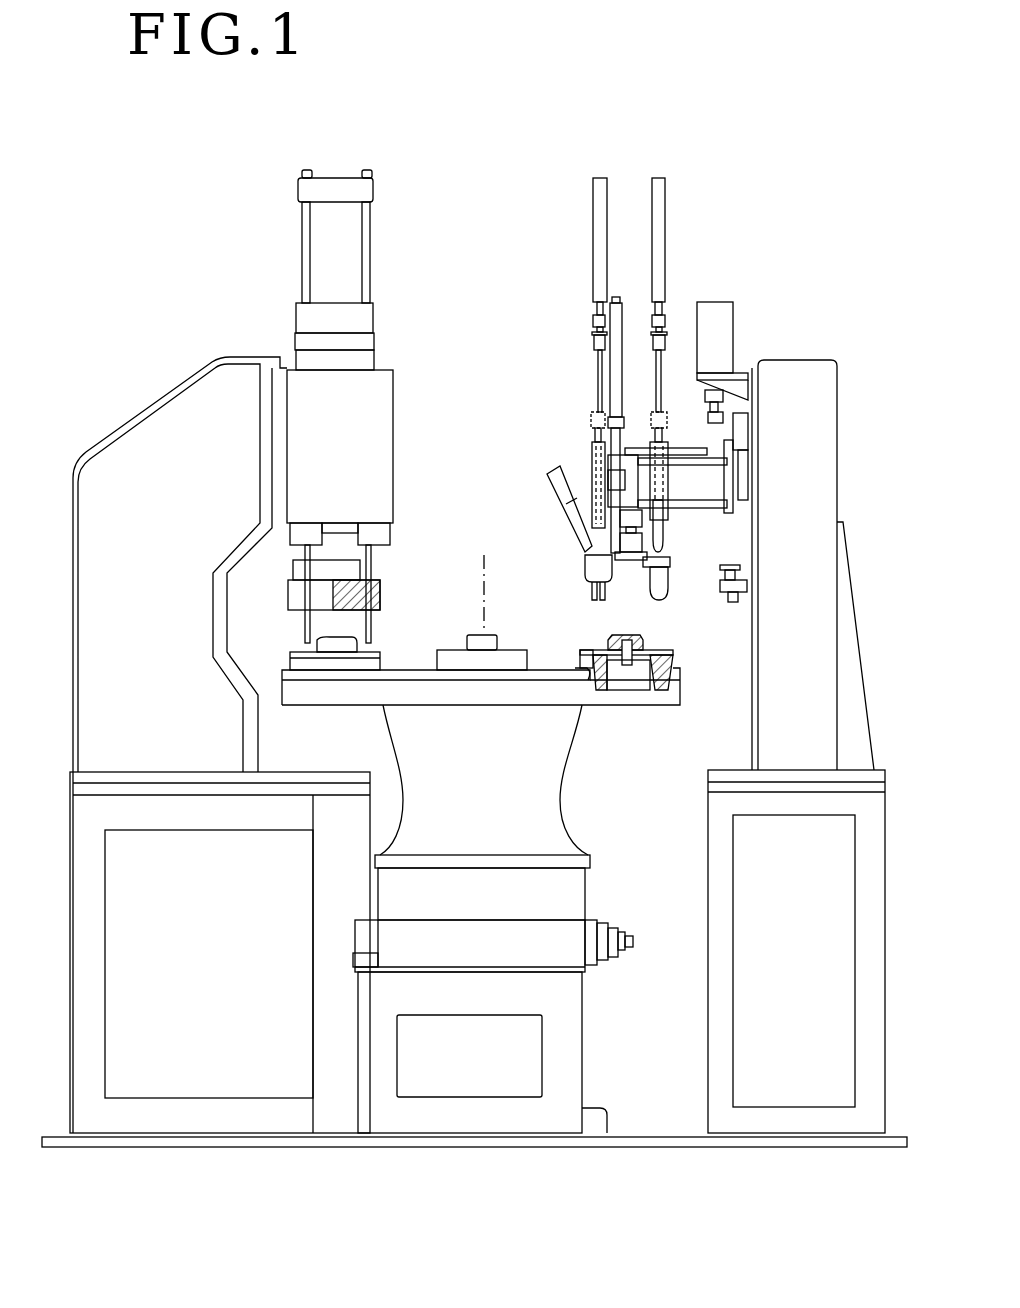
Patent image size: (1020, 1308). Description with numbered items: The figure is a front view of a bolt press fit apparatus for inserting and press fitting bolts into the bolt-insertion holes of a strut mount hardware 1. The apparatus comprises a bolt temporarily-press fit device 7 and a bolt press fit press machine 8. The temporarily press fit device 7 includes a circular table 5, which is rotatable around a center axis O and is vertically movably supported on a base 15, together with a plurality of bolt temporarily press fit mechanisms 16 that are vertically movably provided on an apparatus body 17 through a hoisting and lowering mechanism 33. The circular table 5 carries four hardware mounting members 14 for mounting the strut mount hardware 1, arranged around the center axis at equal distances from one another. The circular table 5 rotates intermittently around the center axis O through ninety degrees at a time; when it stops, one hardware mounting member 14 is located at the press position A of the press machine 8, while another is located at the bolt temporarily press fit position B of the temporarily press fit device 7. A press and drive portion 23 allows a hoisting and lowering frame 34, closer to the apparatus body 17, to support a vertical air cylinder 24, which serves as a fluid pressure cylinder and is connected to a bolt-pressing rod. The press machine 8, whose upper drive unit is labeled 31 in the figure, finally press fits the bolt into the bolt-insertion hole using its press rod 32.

The strut mount hardware 1 is at (661, 650).
The circular table 5 is at (422, 668).
The bolt temporarily-press fit device 7 is at (630, 362).
The bolt press fit press machine 8 is at (405, 396).
The hardware mounting member 14 is at (573, 643).
The base 15 is at (565, 1031).
The bolt temporarily press fit mechanism 16 is at (581, 461).
The apparatus body 17 is at (755, 720).
The press and drive portion 23 is at (650, 203).
The air cylinder 24 is at (649, 213).
The hydraulic cylinder 31 is at (352, 249).
The press rod 32 is at (381, 624).
The hoisting and lowering mechanism 33 is at (763, 336).
The hoisting and lowering frame 34 is at (722, 485).
The press position A is at (329, 714).
The bolt temporarily press fit position B is at (639, 735).
The center axis O is at (490, 576).